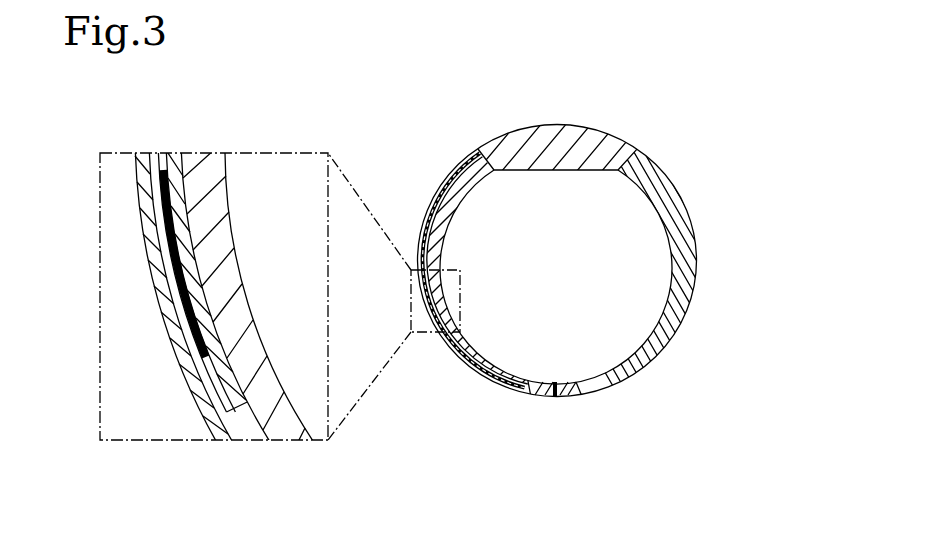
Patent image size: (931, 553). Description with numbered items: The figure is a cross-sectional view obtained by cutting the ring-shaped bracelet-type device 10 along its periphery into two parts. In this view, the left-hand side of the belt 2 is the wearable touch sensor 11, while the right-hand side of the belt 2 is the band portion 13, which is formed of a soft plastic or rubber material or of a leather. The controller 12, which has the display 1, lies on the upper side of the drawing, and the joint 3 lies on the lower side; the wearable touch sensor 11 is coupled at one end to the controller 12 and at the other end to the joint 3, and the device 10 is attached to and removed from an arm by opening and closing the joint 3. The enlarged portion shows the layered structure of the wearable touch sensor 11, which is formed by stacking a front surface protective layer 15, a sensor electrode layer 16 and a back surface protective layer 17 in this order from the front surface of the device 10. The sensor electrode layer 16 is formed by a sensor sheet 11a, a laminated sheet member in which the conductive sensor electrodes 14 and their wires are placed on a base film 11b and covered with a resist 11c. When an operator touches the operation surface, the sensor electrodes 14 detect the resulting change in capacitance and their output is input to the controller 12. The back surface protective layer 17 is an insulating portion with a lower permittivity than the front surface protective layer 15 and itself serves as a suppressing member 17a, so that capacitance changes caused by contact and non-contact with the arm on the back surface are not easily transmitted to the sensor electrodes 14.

The bracelet-type device 10 is at (699, 148).
The wearable touch sensor 11 is at (459, 150).
The sensor sheet 11a is at (224, 288).
The base film 11b is at (183, 175).
The resist 11c is at (198, 381).
The controller 12 is at (577, 102).
The band portion 13 is at (597, 242).
The sensor electrodes 14 is at (178, 340).
The front surface protective layer 15 is at (158, 310).
The sensor electrode layer 16 is at (212, 189).
The back surface protective layer 17 is at (321, 113).
The suppressing member 17a is at (477, 268).
The display 1 is at (533, 65).
The belt 2 is at (680, 322).
The joint 3 is at (568, 397).